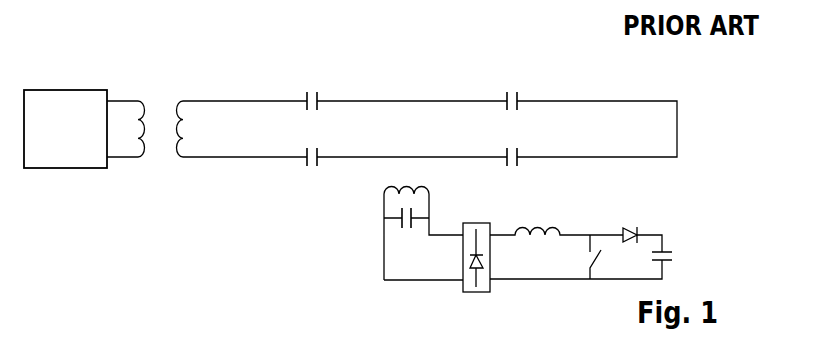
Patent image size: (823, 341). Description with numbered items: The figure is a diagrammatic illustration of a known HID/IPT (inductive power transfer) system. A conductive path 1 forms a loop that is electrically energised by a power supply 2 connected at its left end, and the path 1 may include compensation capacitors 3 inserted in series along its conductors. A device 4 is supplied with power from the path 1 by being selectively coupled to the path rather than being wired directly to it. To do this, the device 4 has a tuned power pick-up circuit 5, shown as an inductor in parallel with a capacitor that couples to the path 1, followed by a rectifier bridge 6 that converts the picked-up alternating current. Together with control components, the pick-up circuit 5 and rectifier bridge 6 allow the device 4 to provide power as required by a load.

The conductive path 1 is at (412, 101).
The power supply 2 is at (70, 168).
The compensation capacitors 3 is at (307, 92).
The device 4 is at (605, 284).
The tuned power pick-up circuit 5 is at (384, 200).
The rectifier bridge 6 is at (463, 290).